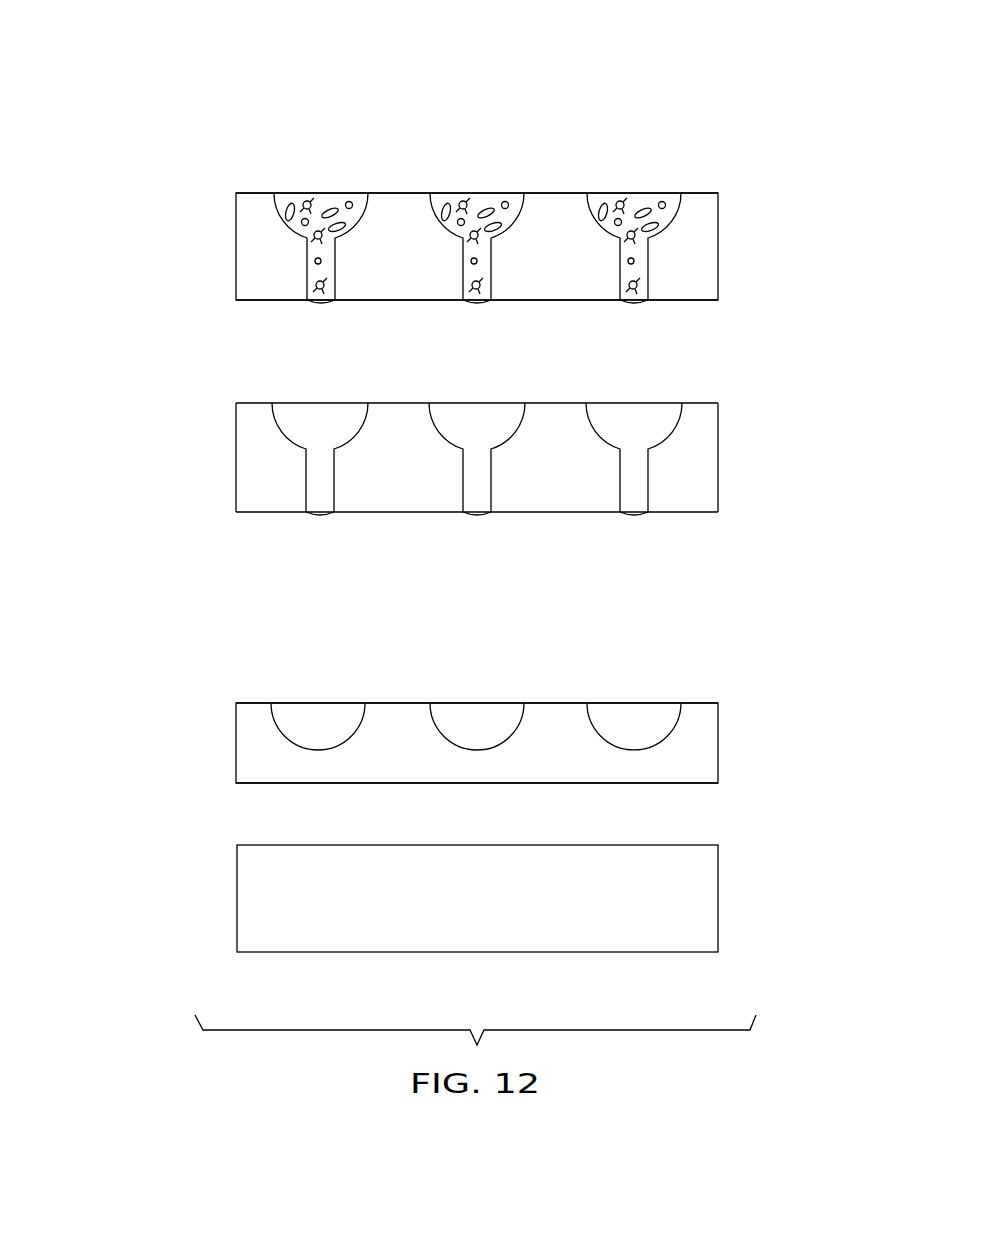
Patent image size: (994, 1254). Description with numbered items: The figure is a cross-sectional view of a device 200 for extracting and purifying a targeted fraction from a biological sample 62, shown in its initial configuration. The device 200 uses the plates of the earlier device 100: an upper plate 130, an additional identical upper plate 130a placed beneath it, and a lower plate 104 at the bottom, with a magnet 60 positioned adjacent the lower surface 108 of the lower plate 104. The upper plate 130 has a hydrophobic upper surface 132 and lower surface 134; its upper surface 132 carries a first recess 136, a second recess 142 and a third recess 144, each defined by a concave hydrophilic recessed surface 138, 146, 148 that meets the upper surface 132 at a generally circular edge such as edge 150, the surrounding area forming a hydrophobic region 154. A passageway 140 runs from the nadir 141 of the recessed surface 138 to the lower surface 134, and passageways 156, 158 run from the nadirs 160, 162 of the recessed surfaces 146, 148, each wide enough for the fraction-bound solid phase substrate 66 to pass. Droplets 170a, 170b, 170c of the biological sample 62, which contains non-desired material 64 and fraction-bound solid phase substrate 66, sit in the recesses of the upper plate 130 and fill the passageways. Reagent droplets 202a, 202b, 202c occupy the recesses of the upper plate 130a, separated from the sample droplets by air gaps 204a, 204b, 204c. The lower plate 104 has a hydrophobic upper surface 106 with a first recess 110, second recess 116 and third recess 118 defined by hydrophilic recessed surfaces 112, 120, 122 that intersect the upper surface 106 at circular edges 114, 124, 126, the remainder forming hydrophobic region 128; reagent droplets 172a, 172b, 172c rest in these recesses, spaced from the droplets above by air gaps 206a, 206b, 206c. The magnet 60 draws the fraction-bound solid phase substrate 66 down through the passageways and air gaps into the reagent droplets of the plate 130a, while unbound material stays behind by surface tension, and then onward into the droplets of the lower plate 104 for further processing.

The device 200 is at (99, 88).
The device 100 is at (183, 326).
The upper plate 130 is at (233, 189).
The upper plate 130a is at (721, 399).
The upper surface 132 is at (721, 189).
The lower surface 134 is at (250, 302).
The first recess 136 is at (335, 188).
The second recess 142 is at (492, 188).
The third recess 144 is at (642, 188).
The recessed surface 138 is at (345, 232).
The nadir 141 is at (305, 240).
The passageway 140 is at (353, 202).
The recessed surface 146 is at (440, 212).
The recessed surface 148 is at (675, 207).
The edge 150 is at (509, 202).
The hydrophobic region 154 is at (665, 202).
The passageway 156 is at (471, 285).
The passageway 158 is at (626, 283).
The nadir 160 is at (495, 240).
The nadir 162 is at (648, 239).
The biological sample 62 is at (336, 204).
The non-desired material 64 is at (319, 196).
The fraction-bound solid phase substrate 66 is at (330, 297).
The droplet 170a is at (290, 203).
The droplet 170b is at (447, 203).
The droplet 170c is at (604, 203).
The air gap 204a is at (347, 337).
The air gap 204b is at (504, 337).
The air gap 204c is at (652, 337).
The droplet 202a is at (300, 438).
The droplet 202b is at (508, 430).
The droplet 202c is at (662, 428).
The lower plate 104 is at (234, 700).
The upper surface 106 is at (253, 703).
The lower surface 108 is at (247, 784).
The first recess 110 is at (348, 698).
The second recess 116 is at (505, 698).
The third recess 118 is at (662, 698).
The recessed surface 112 is at (335, 745).
The recessed surface 120 is at (494, 740).
The recessed surface 122 is at (650, 740).
The edge 114 is at (365, 703).
The edge 124 is at (522, 703).
The edge 126 is at (680, 703).
The hydrophobic region 128 is at (410, 703).
The droplet 172a is at (298, 742).
The droplet 172b is at (507, 732).
The droplet 172c is at (663, 728).
The air gap 206a is at (347, 607).
The air gap 206b is at (504, 607).
The air gap 206c is at (652, 607).
The magnet 60 is at (237, 870).